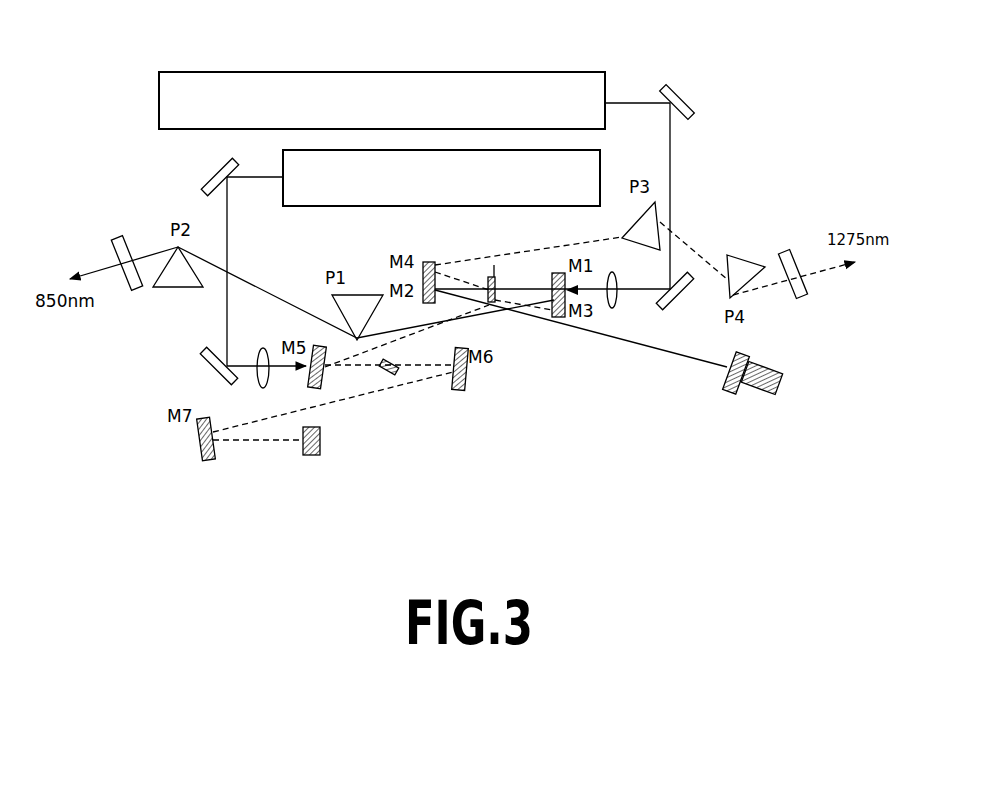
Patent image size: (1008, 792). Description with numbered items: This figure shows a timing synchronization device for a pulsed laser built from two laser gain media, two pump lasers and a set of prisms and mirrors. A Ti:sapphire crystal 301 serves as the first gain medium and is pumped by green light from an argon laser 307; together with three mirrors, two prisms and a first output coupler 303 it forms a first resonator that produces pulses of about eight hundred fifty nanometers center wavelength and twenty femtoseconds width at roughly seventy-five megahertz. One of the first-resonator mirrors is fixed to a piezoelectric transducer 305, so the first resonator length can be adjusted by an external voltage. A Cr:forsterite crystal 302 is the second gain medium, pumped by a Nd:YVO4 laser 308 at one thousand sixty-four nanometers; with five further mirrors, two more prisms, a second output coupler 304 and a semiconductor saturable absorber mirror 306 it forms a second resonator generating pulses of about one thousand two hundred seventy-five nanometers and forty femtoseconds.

The Ti:sapphire crystal 301 is at (496, 302).
The Cr:forsterite crystal 302 is at (393, 375).
The first output coupler 303 is at (130, 290).
The second output coupler 304 is at (790, 254).
The piezoelectric transducer 305 is at (762, 393).
The semiconductor saturable absorber mirror 306 is at (312, 456).
The argon laser 307 is at (567, 72).
The Nd:YVO4 laser 308 is at (283, 175).